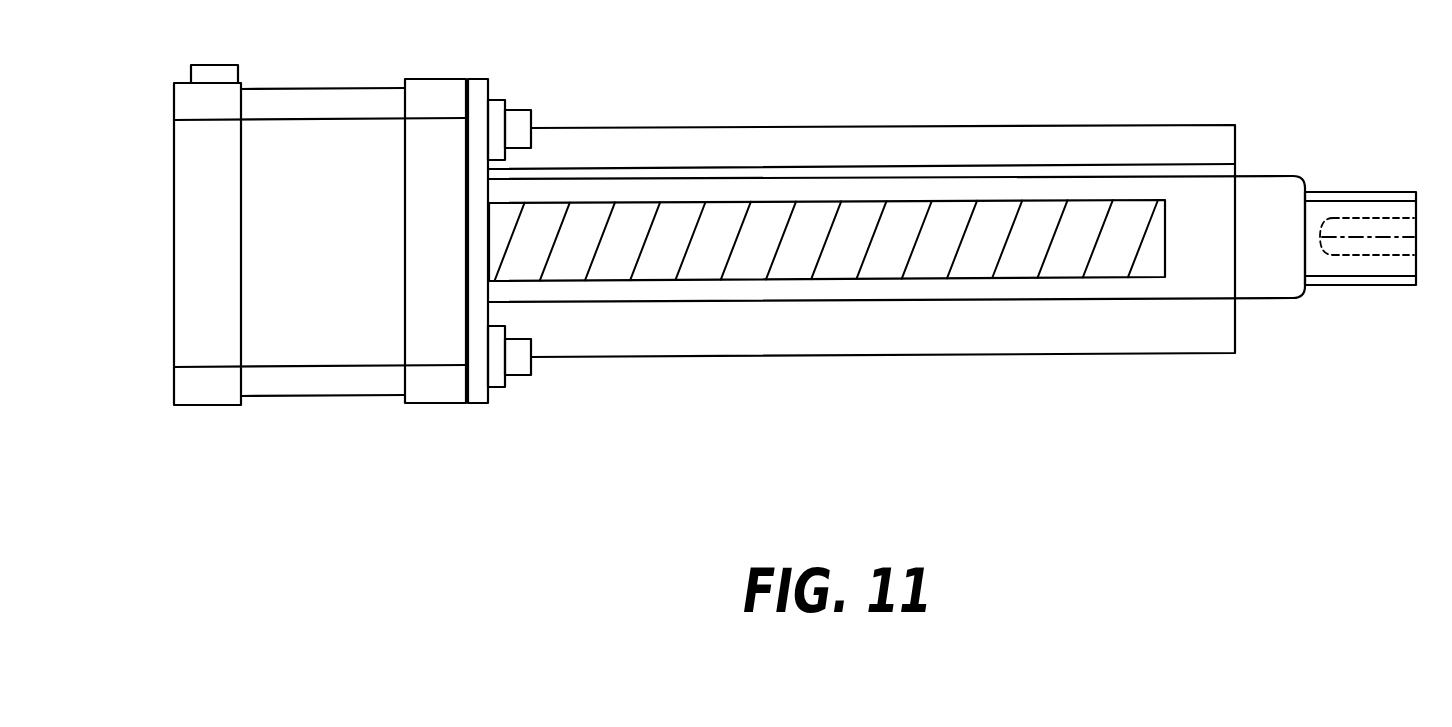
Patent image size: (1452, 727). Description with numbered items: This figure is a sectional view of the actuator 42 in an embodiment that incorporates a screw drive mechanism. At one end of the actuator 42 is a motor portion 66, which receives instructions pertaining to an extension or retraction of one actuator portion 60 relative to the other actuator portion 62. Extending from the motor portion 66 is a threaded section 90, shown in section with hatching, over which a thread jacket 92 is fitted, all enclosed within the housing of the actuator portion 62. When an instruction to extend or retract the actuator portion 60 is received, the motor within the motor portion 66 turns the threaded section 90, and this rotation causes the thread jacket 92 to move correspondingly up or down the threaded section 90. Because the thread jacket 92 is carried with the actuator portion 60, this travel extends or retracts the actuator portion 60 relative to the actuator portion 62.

The actuator 42 is at (808, 272).
The motor portion 66 is at (347, 165).
The actuator portion 62 is at (1142, 354).
The thread jacket 92 is at (1190, 193).
The threaded section 90 is at (852, 250).
The actuator portion 60 is at (1318, 190).